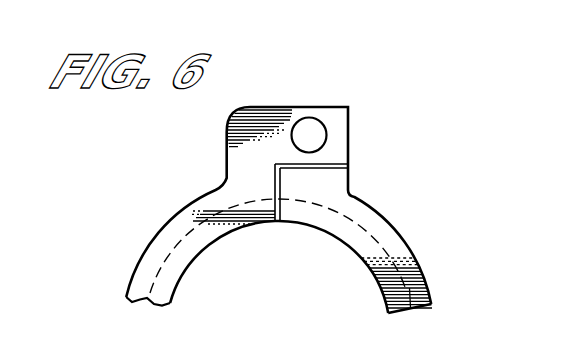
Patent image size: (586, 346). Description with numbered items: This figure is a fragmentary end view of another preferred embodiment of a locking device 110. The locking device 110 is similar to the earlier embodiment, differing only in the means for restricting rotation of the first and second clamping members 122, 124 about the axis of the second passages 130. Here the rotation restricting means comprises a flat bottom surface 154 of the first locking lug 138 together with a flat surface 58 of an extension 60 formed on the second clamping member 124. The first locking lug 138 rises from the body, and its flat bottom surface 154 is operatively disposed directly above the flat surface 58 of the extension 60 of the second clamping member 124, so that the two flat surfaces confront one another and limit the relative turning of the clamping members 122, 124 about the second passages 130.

The locking device 110 is at (212, 183).
The first locking lug 138 is at (302, 93).
The flat bottom surface 154 is at (318, 163).
The flat surface 58 is at (333, 169).
The extension 60 is at (295, 182).
The first clamping member 122 is at (163, 226).
The second clamping member 124 is at (418, 257).
The second passages 130 is at (295, 262).